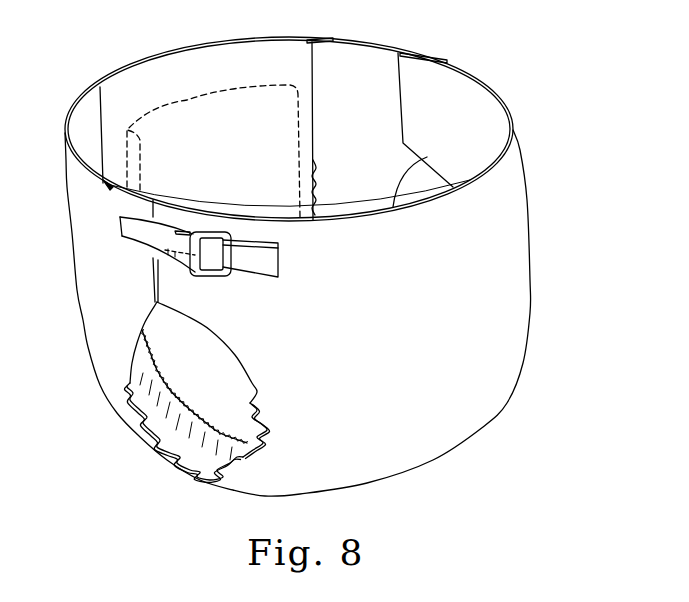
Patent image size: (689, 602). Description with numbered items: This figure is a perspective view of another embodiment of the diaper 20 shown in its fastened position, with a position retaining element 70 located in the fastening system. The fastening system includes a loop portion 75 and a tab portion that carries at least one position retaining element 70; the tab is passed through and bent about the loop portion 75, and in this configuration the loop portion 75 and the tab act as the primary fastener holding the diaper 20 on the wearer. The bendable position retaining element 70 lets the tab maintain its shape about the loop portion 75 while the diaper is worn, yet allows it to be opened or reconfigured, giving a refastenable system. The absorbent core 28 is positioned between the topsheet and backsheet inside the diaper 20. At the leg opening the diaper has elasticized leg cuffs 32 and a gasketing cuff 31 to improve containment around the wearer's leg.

The diaper 20 is at (549, 119).
The absorbent core 28 is at (187, 97).
The gasketing cuff 31 is at (157, 433).
The elasticized leg cuffs 32 is at (152, 362).
The position retaining element 70 is at (173, 253).
The loop portion 75 is at (227, 278).